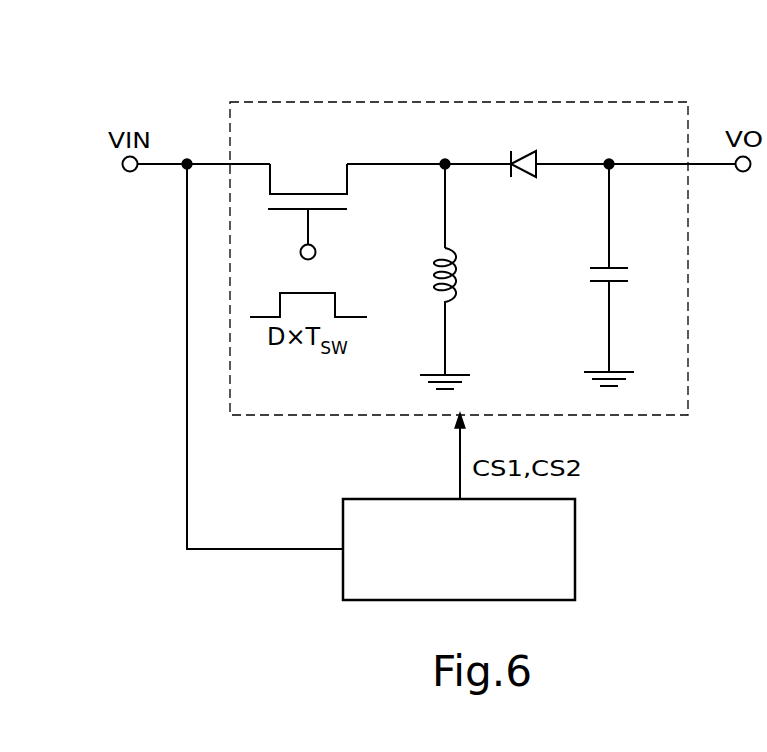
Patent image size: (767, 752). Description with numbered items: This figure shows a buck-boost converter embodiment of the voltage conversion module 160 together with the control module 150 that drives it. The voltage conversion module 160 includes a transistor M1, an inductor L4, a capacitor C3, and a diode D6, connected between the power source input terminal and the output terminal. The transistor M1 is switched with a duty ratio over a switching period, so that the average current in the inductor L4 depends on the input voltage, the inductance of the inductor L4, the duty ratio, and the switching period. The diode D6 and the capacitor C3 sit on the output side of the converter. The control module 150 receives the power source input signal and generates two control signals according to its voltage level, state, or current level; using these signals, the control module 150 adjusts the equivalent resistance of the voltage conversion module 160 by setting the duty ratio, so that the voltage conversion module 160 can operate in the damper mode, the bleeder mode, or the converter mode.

The voltage conversion module 160 is at (493, 101).
The control module 150 is at (481, 578).
The transistor M1 is at (307, 196).
The diode D6 is at (529, 150).
The inductor L4 is at (456, 276).
The capacitor C3 is at (626, 275).